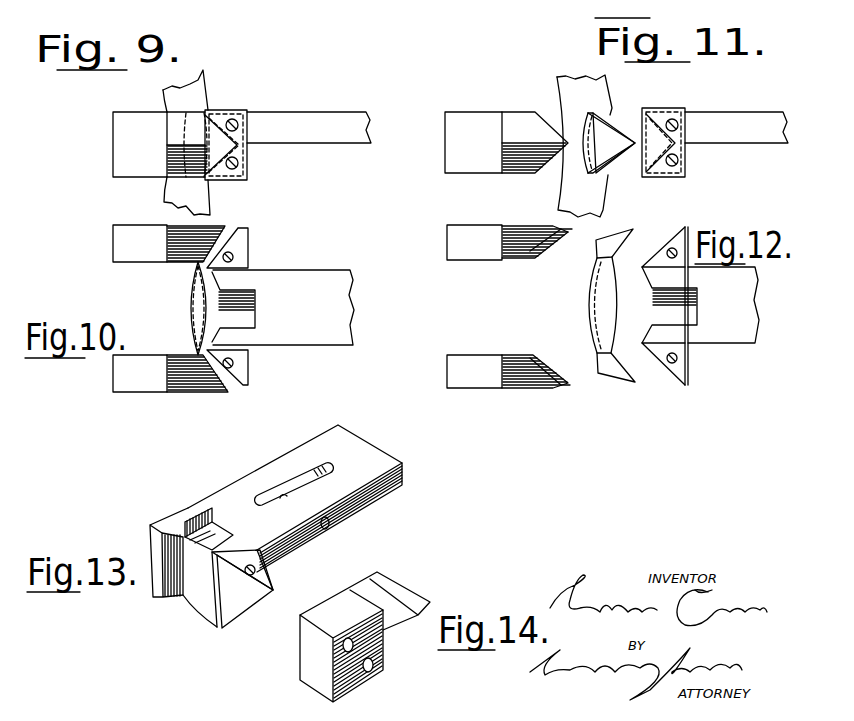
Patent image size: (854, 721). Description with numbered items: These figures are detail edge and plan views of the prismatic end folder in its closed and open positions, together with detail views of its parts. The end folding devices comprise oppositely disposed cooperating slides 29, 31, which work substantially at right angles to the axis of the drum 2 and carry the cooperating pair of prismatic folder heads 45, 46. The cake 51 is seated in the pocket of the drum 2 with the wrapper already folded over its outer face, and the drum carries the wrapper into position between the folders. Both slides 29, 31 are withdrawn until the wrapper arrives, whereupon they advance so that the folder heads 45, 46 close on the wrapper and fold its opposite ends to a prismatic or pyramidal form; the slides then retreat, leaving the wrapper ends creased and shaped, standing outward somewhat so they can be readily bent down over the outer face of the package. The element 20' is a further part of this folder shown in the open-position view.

In FIG. 9, the drum 2 is at (200, 70).
In FIG. 11, the drum 2 is at (590, 77).
In FIG. 11, the prism lens 20' is at (617, 119).
In FIG. 9, the slide 29 is at (122, 120).
In FIG. 10, the slide 29 is at (136, 257).
In FIG. 11, the slide 29 is at (458, 118).
In FIG. 12, the slide 29 is at (462, 253).
In FIG. 9, the slide 31 is at (309, 127).
In FIG. 10, the slide 31 is at (306, 335).
In FIG. 11, the slide 31 is at (736, 127).
In FIG. 12, the slide 31 is at (725, 338).
In FIG. 13, the slide 31 is at (255, 482).
In FIG. 10, the prismatic folder head 45 is at (217, 232).
In FIG. 11, the prismatic folder head 45 is at (540, 125).
In FIG. 12, the prismatic folder head 45 is at (518, 253).
In FIG. 14, the prismatic folder head 45 is at (398, 620).
In FIG. 10, the prismatic folder head 46 is at (238, 232).
In FIG. 11, the prismatic folder head 46 is at (644, 112).
In FIG. 13, the prismatic folder head 46 is at (158, 523).
In FIG. 10, the cake 51 is at (184, 321).
In FIG. 11, the cake 51 is at (577, 163).
In FIG. 12, the cake 51 is at (582, 293).